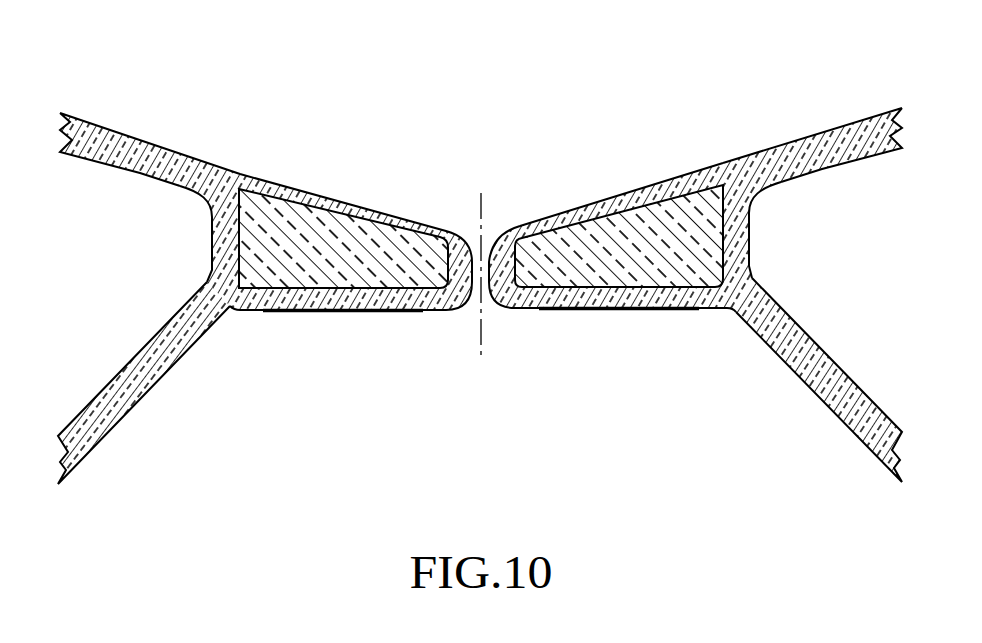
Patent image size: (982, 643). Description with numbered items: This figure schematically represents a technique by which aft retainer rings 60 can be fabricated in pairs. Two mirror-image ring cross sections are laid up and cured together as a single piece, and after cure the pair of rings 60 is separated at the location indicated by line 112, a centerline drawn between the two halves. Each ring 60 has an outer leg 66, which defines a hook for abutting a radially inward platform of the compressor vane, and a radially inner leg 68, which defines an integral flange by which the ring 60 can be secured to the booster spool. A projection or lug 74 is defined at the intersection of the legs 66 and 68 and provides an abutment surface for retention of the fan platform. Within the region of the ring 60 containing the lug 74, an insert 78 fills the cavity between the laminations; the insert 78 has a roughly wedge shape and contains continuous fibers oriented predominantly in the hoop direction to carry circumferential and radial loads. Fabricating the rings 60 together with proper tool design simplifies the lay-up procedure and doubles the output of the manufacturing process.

The aft retainer ring 60 is at (320, 137).
The outer leg 66 is at (180, 113).
The radially inner leg 68 is at (187, 398).
The lug 74 is at (313, 344).
The insert 78 is at (407, 238).
The line 112 is at (481, 338).